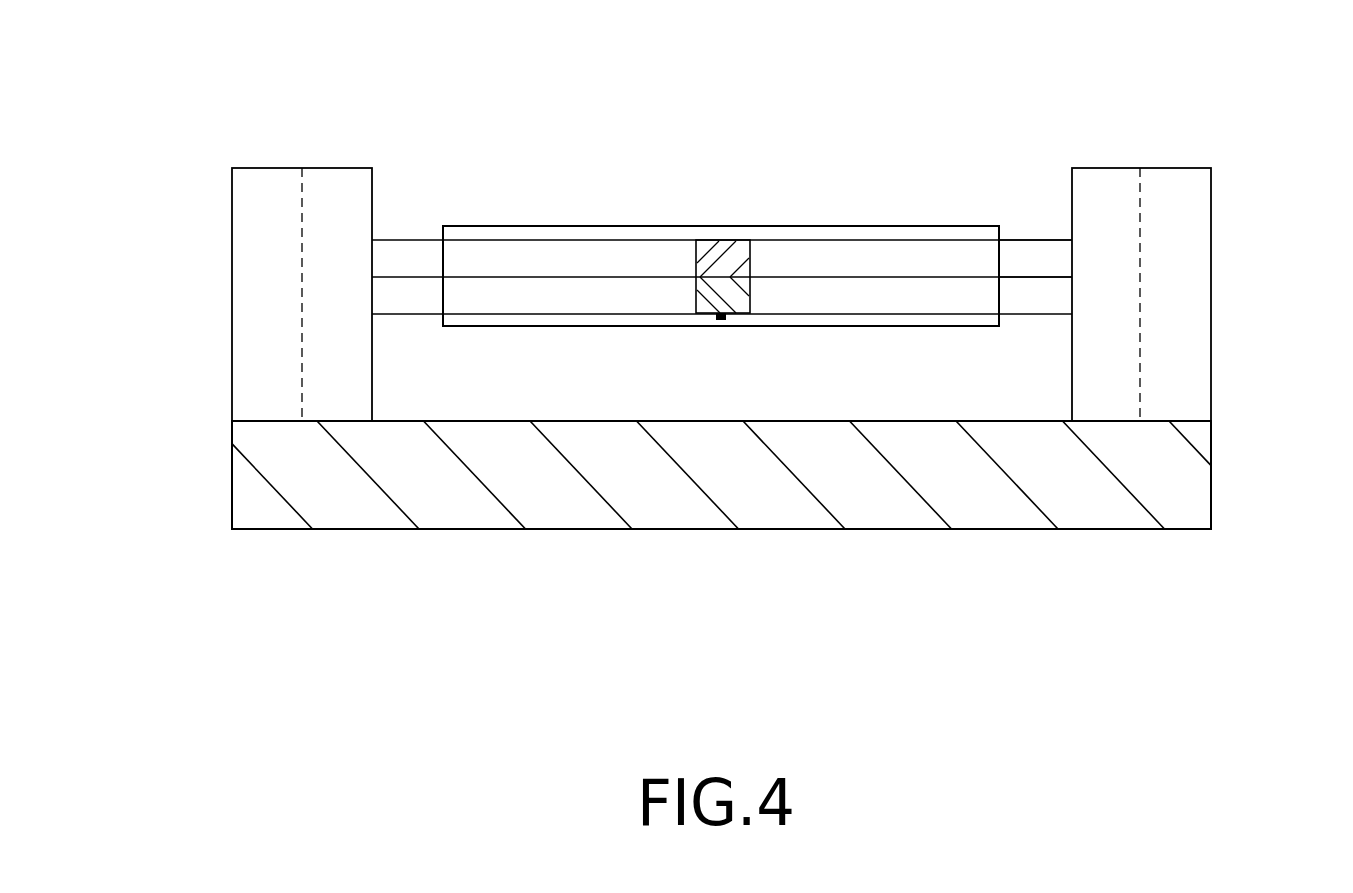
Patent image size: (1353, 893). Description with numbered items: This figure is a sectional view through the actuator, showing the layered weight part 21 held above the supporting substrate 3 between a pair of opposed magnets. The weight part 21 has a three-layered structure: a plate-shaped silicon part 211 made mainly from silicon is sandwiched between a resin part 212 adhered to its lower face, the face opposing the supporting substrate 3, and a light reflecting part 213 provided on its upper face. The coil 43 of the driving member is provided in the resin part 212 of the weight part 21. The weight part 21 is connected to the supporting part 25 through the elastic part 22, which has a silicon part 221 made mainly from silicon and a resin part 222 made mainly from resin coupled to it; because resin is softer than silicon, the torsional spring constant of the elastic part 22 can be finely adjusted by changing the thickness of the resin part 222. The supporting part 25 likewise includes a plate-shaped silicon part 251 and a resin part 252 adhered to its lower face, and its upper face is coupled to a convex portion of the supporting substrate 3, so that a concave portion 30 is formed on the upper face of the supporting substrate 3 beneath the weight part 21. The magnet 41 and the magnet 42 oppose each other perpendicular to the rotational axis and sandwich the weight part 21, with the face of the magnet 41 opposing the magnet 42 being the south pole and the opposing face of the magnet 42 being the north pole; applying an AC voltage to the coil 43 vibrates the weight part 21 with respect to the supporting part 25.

The supporting substrate 3 is at (672, 502).
The concave portion 30 is at (855, 375).
The weight part 21 is at (440, 70).
The silicon part 211 is at (555, 258).
The resin part 212 is at (622, 302).
The light reflecting part 213 is at (475, 242).
The elastic part 22 is at (872, 70).
The silicon part 221 is at (715, 260).
The resin part 222 is at (738, 293).
The supporting part 25 is at (1095, 70).
The silicon part 251 is at (1014, 262).
The resin part 252 is at (1040, 297).
The magnet 41 is at (1183, 314).
The magnet 42 is at (265, 292).
The coil 43 is at (522, 318).